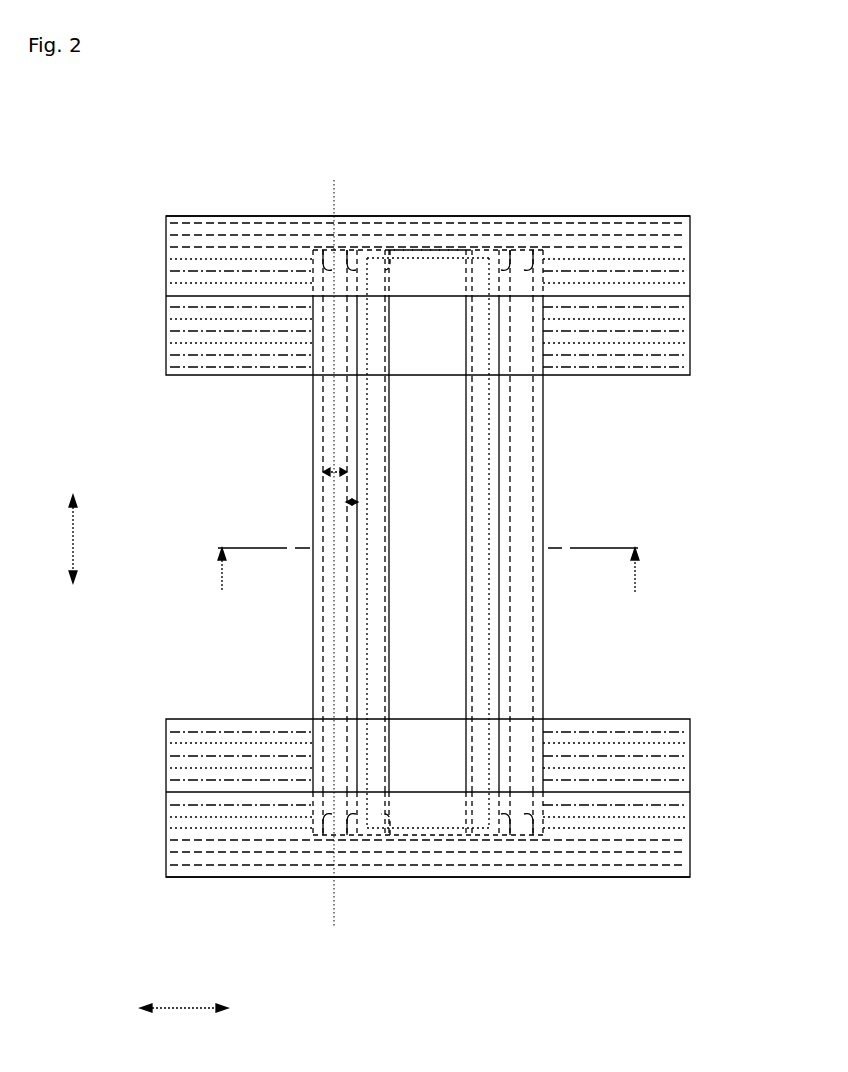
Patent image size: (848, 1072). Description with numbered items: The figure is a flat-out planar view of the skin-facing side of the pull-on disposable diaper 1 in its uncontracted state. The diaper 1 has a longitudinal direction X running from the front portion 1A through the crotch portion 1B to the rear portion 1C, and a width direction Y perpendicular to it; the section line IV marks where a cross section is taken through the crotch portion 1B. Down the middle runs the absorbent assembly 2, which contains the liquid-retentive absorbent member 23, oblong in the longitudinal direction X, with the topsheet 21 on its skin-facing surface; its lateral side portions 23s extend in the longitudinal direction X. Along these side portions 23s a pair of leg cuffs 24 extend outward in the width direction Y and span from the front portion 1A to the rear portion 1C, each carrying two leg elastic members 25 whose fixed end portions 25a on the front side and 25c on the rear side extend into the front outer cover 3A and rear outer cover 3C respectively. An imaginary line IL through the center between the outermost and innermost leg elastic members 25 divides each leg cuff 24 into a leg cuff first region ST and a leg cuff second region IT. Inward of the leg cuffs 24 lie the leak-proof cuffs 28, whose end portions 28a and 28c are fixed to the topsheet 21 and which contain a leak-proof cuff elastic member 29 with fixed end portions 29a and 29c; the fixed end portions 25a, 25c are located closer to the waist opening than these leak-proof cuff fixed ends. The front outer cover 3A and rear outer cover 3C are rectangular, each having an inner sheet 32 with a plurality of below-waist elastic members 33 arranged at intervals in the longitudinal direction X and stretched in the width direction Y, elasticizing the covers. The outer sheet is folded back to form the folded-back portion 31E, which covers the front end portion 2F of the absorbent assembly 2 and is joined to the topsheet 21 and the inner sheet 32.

The pull-on disposable diaper 1 is at (722, 112).
The front portion 1A is at (497, 295).
The crotch portion 1B is at (772, 380).
The rear portion 1C is at (497, 798).
The absorbent assembly 2 is at (255, 525).
The front end portion of the absorbent assembly 2F is at (417, 270).
The front outer cover 3A is at (772, 216).
The rear outer cover 3C is at (772, 877).
The topsheet 21 is at (445, 477).
The absorbent member 23 is at (445, 517).
The lateral side portions of the absorbent member 23s is at (362, 643).
The leg cuff 24 is at (330, 432).
The leg elastic member 25 is at (325, 408).
The fixed end portions of the leg elastic members on the front portion side 25a is at (313, 248).
The fixed end portions of the leg elastic members on the rear portion side 25c is at (347, 832).
The leak-proof cuff 28 is at (350, 612).
The end portion of the leak-proof cuff on the front portion side 28a is at (372, 302).
The end portion of the leak-proof cuff on the rear portion side 28c is at (372, 785).
The leak-proof cuff elastic member 29 is at (375, 668).
The leak-proof cuff fixed end portion on the front portion side 29a is at (390, 250).
The leak-proof cuff fixed end portion on the rear portion side 29c is at (392, 835).
The folded-back portion 31E is at (648, 235).
The inner sheet 32 is at (683, 327).
The below-waist elastic members 33 is at (210, 260).
The imaginary line IL is at (339, 567).
The leg cuff first region ST is at (313, 470).
The leg cuff second region IT is at (313, 505).
The section line IV is at (426, 570).
The longitudinal direction X is at (64, 539).
The width direction Y is at (184, 1020).